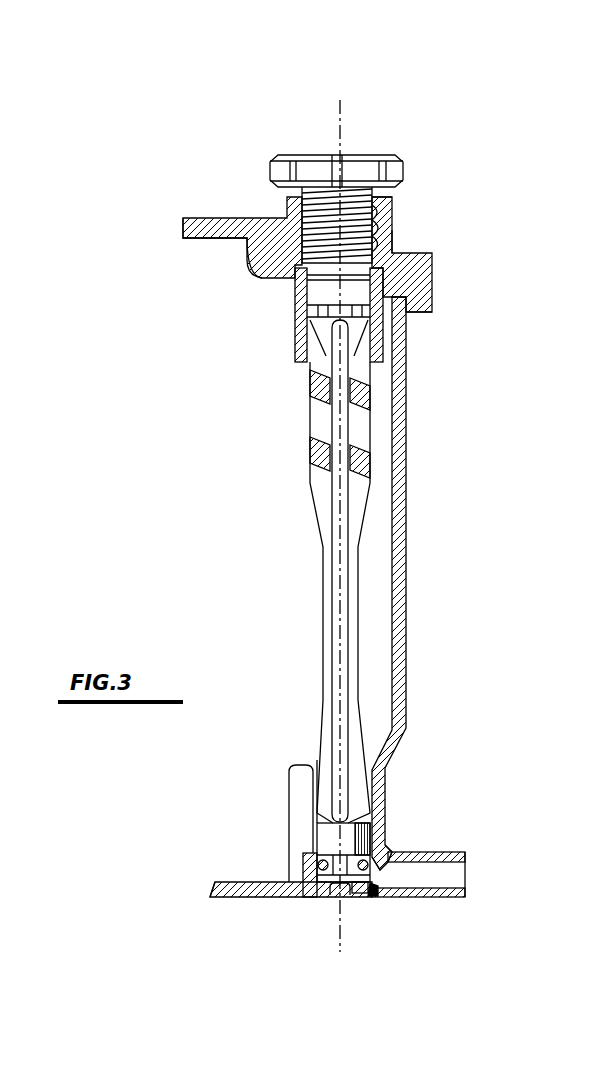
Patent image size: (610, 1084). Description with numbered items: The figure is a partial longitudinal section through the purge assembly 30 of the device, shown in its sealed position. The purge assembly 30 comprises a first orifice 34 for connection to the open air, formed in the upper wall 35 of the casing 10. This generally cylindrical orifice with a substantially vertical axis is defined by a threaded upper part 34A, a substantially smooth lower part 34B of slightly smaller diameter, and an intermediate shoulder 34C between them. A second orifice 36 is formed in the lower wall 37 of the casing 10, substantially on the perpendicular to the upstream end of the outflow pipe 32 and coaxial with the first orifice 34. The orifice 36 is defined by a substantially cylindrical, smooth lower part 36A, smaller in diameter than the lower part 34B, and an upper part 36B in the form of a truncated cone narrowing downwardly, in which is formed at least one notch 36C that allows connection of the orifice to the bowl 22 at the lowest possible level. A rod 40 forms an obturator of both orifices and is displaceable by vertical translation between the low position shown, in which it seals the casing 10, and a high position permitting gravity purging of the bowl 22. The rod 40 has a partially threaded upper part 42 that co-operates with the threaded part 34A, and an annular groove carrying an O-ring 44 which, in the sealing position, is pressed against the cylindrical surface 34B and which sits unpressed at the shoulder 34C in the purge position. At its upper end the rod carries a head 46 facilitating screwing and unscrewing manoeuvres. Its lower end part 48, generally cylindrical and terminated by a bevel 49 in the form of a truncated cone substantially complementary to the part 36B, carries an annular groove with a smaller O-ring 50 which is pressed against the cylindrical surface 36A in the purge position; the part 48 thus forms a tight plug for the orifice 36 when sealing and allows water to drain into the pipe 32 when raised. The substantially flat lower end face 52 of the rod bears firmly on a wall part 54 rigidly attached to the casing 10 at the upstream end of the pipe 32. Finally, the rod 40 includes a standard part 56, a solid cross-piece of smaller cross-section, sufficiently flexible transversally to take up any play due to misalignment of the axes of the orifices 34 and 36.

The casing 10 is at (408, 476).
The bowl 22 is at (233, 882).
The purge assembly 30 is at (410, 157).
The outflow pipe 32 is at (442, 877).
The first orifice 34 is at (286, 202).
The threaded upper part 34A is at (392, 200).
The smooth lower part 34B is at (430, 308).
The intermediate shoulder 34C is at (392, 240).
The upper wall 35 is at (258, 274).
The second orifice 36 is at (372, 896).
The smooth lower part 36A is at (303, 858).
The truncated-cone upper part 36B is at (322, 790).
The notch 36C is at (303, 822).
The lower wall 37 is at (205, 870).
The rod 40 is at (307, 423).
The upper part 42 is at (385, 229).
The O-ring 44 is at (298, 314).
The head 46 is at (308, 163).
The lower end part 48 is at (380, 840).
The bevel 49 is at (302, 898).
The O-ring 50 is at (383, 850).
The lower end face 52 is at (352, 900).
The wall part 54 is at (335, 897).
The standard part 56 is at (337, 580).